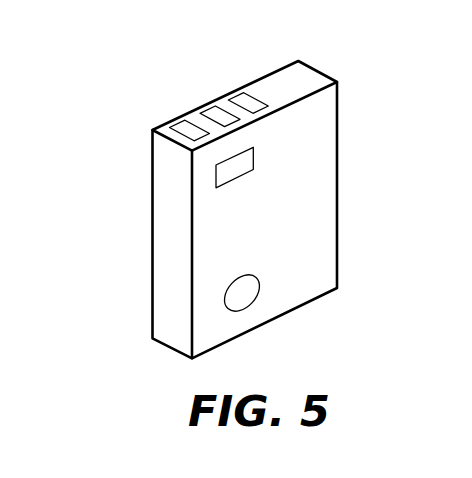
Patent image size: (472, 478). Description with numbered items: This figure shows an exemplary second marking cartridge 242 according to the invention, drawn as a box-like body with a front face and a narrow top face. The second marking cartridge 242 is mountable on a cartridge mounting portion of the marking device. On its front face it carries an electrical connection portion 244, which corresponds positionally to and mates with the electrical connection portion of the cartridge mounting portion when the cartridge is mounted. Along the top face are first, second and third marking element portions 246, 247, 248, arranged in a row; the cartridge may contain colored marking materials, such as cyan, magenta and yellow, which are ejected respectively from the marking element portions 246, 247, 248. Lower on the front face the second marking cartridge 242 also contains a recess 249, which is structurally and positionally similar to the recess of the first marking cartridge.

The second marking cartridge 242 is at (168, 243).
The electrical connection portion 244 is at (240, 168).
The first marking element portion 246 is at (189, 128).
The second marking element portion 247 is at (216, 117).
The third marking element portion 248 is at (244, 101).
The recess 249 is at (247, 287).